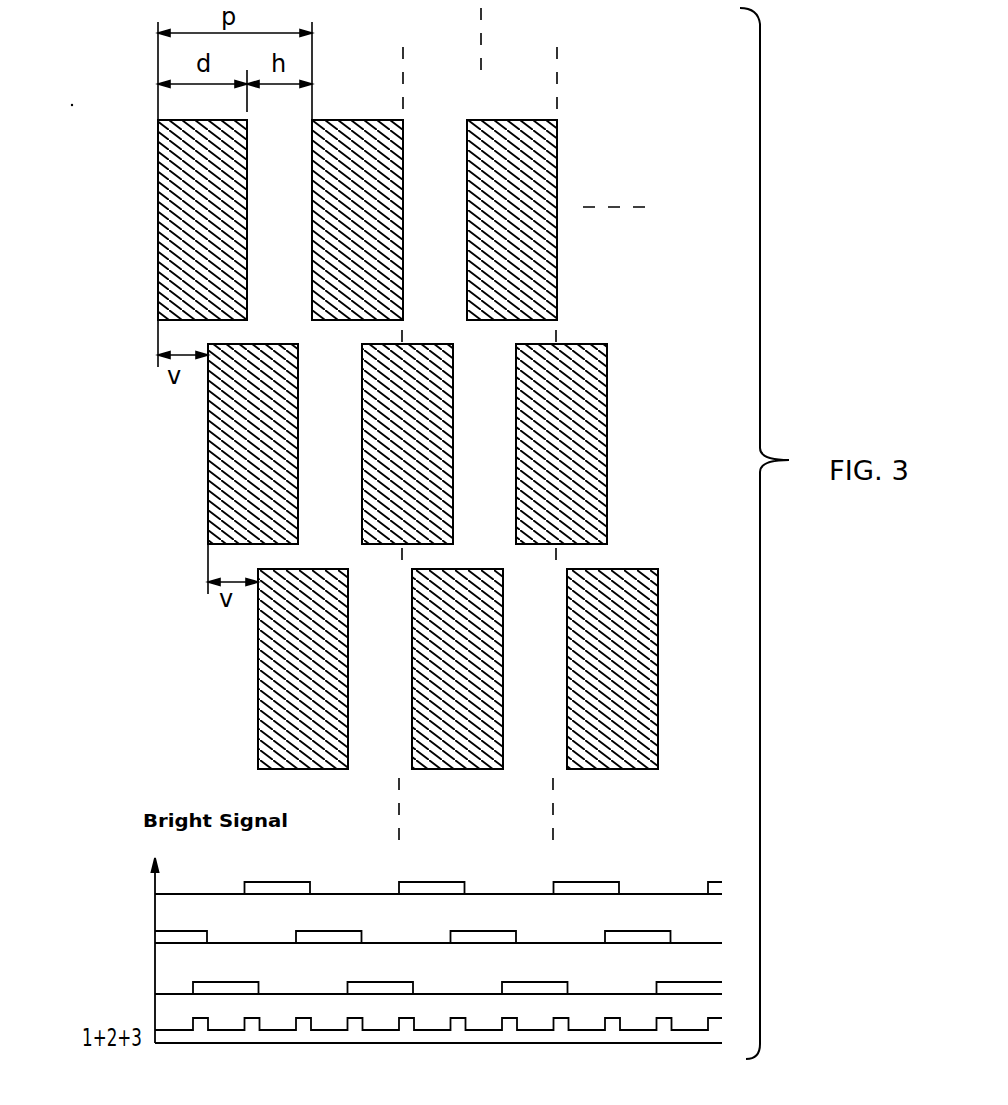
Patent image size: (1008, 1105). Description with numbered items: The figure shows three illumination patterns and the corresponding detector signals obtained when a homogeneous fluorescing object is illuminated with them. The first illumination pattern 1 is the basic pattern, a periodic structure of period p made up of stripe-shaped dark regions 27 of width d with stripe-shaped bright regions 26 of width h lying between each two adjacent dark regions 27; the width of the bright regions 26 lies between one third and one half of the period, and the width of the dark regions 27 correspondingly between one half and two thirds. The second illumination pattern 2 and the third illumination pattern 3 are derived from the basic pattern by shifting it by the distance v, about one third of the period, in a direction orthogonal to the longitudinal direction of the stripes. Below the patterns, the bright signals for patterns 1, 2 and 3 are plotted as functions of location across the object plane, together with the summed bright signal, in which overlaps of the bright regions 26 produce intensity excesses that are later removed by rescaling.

The stripe-shaped bright regions 26 is at (283, 136).
The stripe-shaped dark regions 27 is at (193, 273).
The first illumination pattern 1 is at (131, 207).
The second illumination pattern 2 is at (375, 687).
The third illumination pattern 3 is at (375, 836).